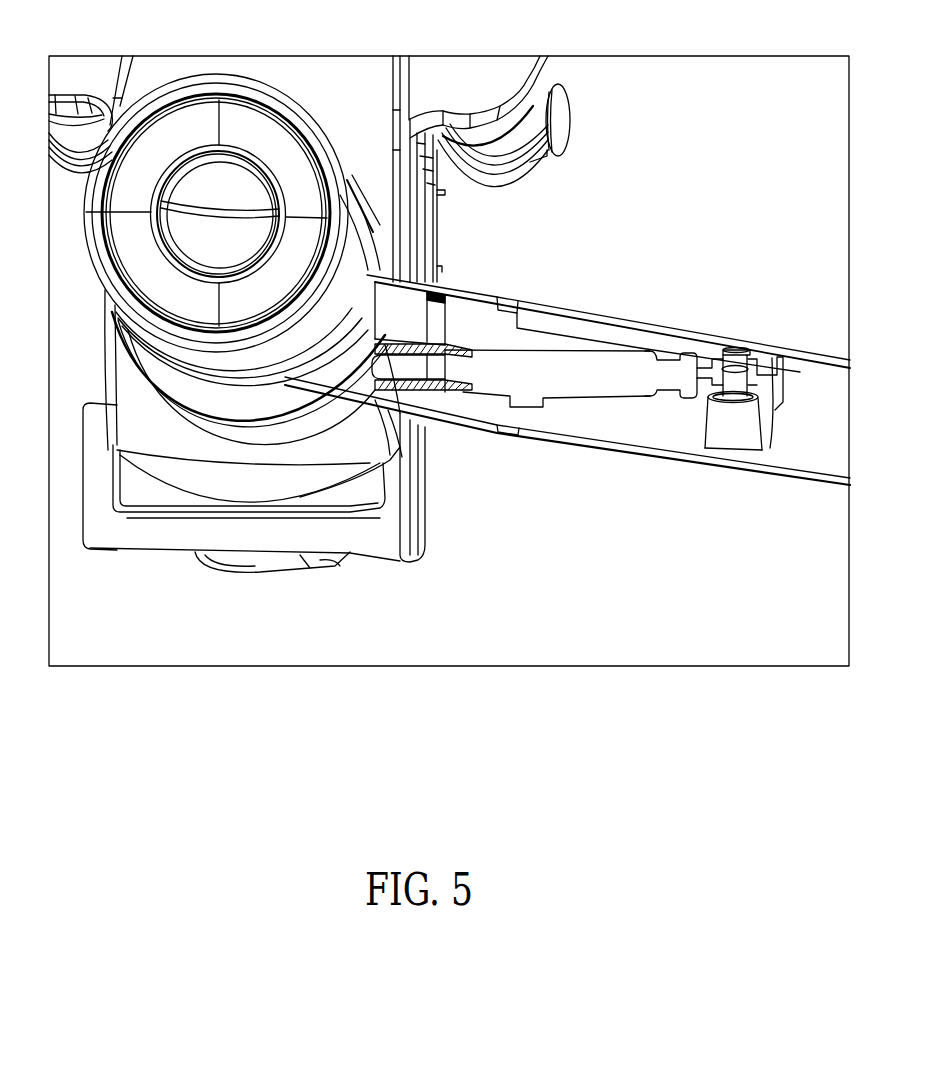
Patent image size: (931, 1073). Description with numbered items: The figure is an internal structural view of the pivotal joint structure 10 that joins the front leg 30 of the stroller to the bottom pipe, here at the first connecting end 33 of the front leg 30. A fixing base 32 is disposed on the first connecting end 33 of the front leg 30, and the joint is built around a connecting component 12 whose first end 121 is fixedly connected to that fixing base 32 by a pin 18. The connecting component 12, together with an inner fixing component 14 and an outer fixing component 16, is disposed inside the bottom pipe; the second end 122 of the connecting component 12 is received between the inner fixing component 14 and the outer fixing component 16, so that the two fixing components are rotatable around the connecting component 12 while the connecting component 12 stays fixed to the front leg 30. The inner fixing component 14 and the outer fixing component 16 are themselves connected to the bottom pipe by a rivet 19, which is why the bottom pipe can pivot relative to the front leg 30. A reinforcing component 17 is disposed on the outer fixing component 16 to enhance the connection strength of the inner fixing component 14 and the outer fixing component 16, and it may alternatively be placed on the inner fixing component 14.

The pivotal joint structure 10 is at (708, 170).
The front leg 30 is at (348, 70).
The fixing base 32 is at (352, 380).
The first connecting end 33 is at (245, 425).
The connecting component 12 is at (568, 392).
The first end 121 is at (405, 365).
The second end 122 is at (683, 403).
The inner fixing component 14 is at (631, 425).
The outer fixing component 16 is at (567, 332).
The reinforcing component 17 is at (750, 445).
The pin 18 is at (437, 322).
The rivet 19 is at (736, 352).